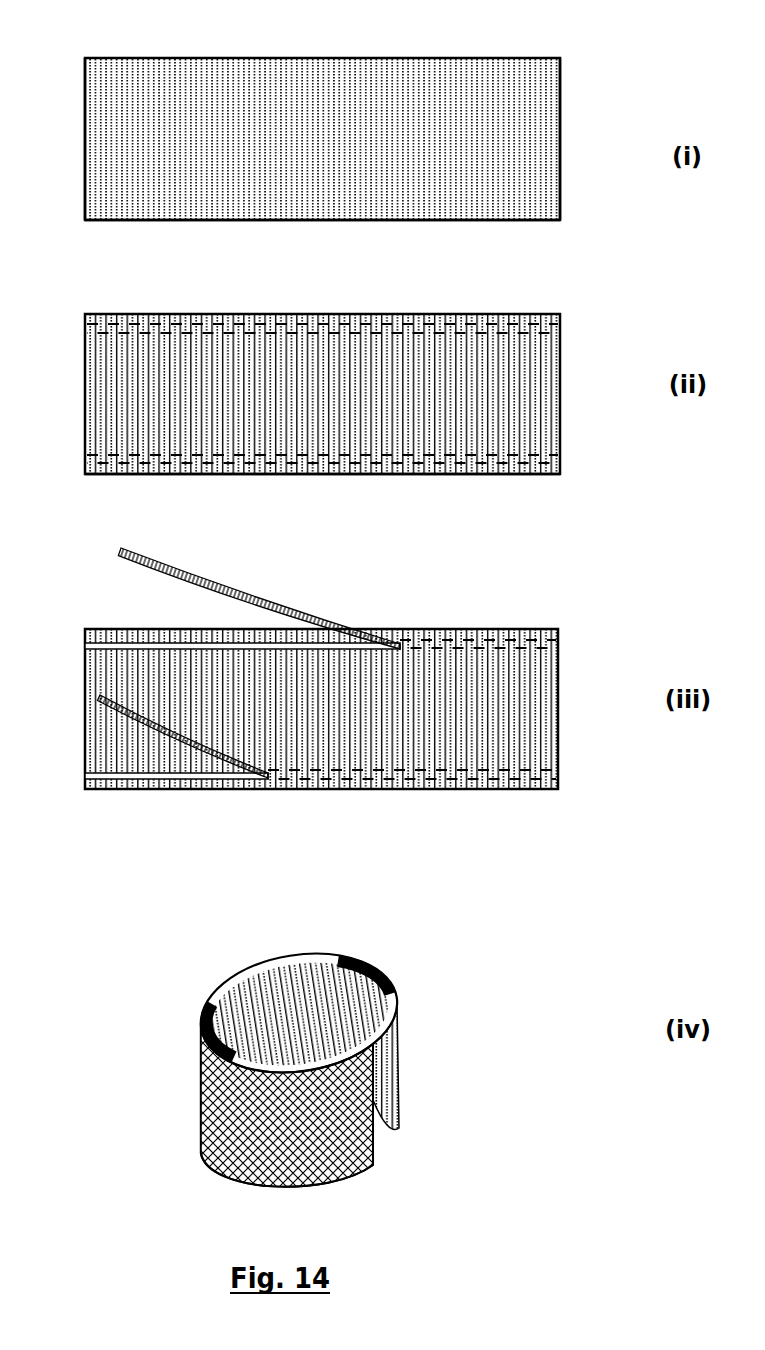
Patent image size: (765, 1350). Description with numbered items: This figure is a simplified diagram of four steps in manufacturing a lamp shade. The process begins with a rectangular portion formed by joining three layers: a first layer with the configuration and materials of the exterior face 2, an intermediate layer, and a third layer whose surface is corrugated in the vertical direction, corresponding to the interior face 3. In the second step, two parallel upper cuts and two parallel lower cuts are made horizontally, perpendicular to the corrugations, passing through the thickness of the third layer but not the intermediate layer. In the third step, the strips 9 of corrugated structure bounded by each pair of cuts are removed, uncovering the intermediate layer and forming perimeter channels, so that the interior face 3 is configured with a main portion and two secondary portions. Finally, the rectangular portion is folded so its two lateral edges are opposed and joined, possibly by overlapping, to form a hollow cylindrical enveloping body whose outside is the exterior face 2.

The exterior face 2 is at (222, 1135).
The interior face 3 is at (262, 1017).
The removed strip 9 is at (160, 563).